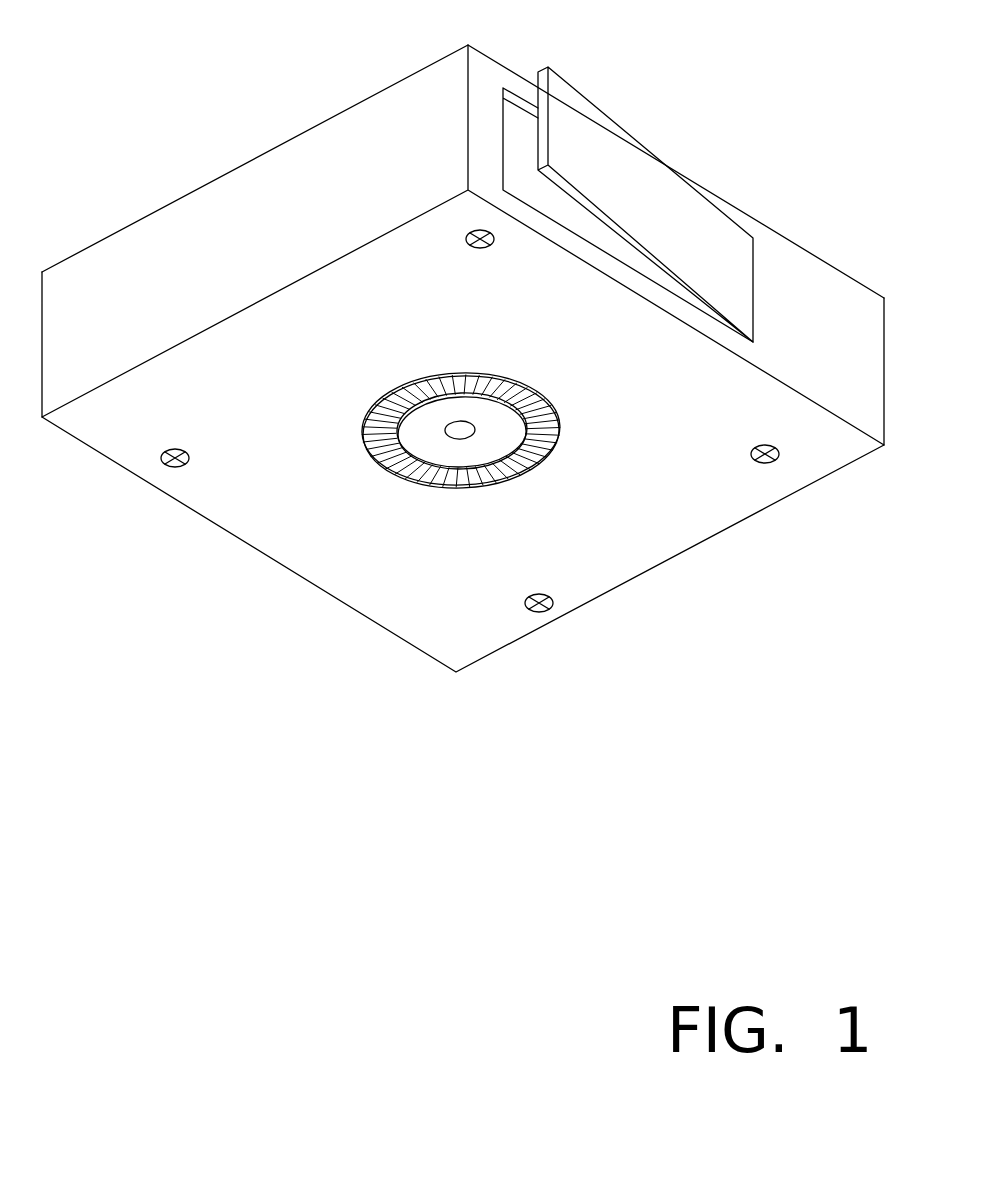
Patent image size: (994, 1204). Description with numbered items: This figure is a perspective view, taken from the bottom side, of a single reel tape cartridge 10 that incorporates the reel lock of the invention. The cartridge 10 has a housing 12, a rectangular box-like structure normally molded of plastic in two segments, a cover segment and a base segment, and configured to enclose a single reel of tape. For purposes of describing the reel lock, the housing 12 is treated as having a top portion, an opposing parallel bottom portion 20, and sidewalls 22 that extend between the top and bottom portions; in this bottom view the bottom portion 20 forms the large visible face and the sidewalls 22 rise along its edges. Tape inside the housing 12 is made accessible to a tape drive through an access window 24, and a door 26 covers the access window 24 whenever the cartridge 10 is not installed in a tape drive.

The single reel tape cartridge 10 is at (203, 122).
The housing 12 is at (132, 230).
The bottom portion 20 is at (312, 558).
The sidewalls 22 is at (397, 115).
The access window 24 is at (512, 113).
The door 26 is at (615, 150).